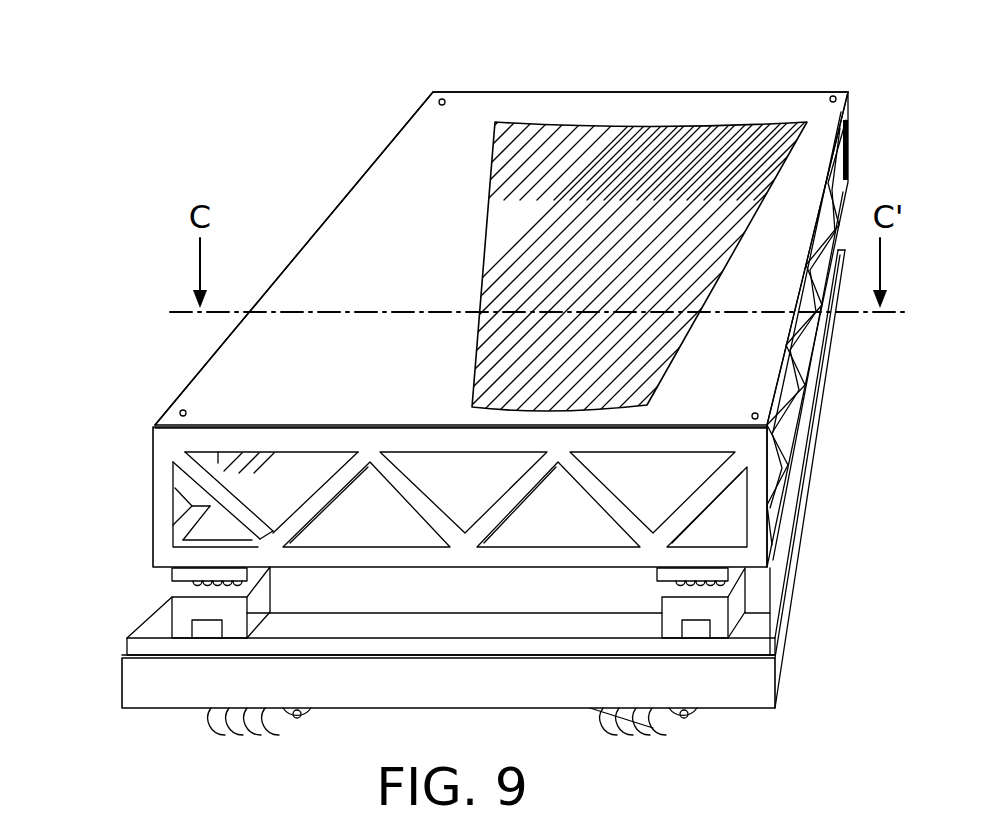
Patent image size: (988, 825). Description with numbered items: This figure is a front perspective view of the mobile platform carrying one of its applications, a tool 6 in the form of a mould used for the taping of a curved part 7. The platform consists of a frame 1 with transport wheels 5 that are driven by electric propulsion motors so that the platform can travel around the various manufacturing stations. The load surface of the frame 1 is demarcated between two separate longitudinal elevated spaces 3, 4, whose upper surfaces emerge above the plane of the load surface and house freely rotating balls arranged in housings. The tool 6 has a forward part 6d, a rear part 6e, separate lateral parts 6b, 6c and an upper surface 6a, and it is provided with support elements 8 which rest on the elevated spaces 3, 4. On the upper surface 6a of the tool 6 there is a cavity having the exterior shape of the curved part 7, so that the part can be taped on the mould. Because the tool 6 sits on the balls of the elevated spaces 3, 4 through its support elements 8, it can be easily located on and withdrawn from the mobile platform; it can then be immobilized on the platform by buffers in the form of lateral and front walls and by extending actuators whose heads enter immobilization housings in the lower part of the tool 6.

The frame 1 is at (106, 692).
The longitudinal elevated space 3 is at (177, 618).
The longitudinal elevated space 4 is at (725, 617).
The transport wheels 5 is at (277, 722).
The tool 6 is at (338, 151).
The upper surface of the tool 6a is at (501, 260).
The lateral part of the tool 6b is at (219, 350).
The lateral part of the tool 6c is at (792, 392).
The forward part of the tool 6d is at (228, 451).
The rear part of the tool 6e is at (545, 91).
The curved part 7 is at (670, 165).
The support elements 8 is at (173, 574).